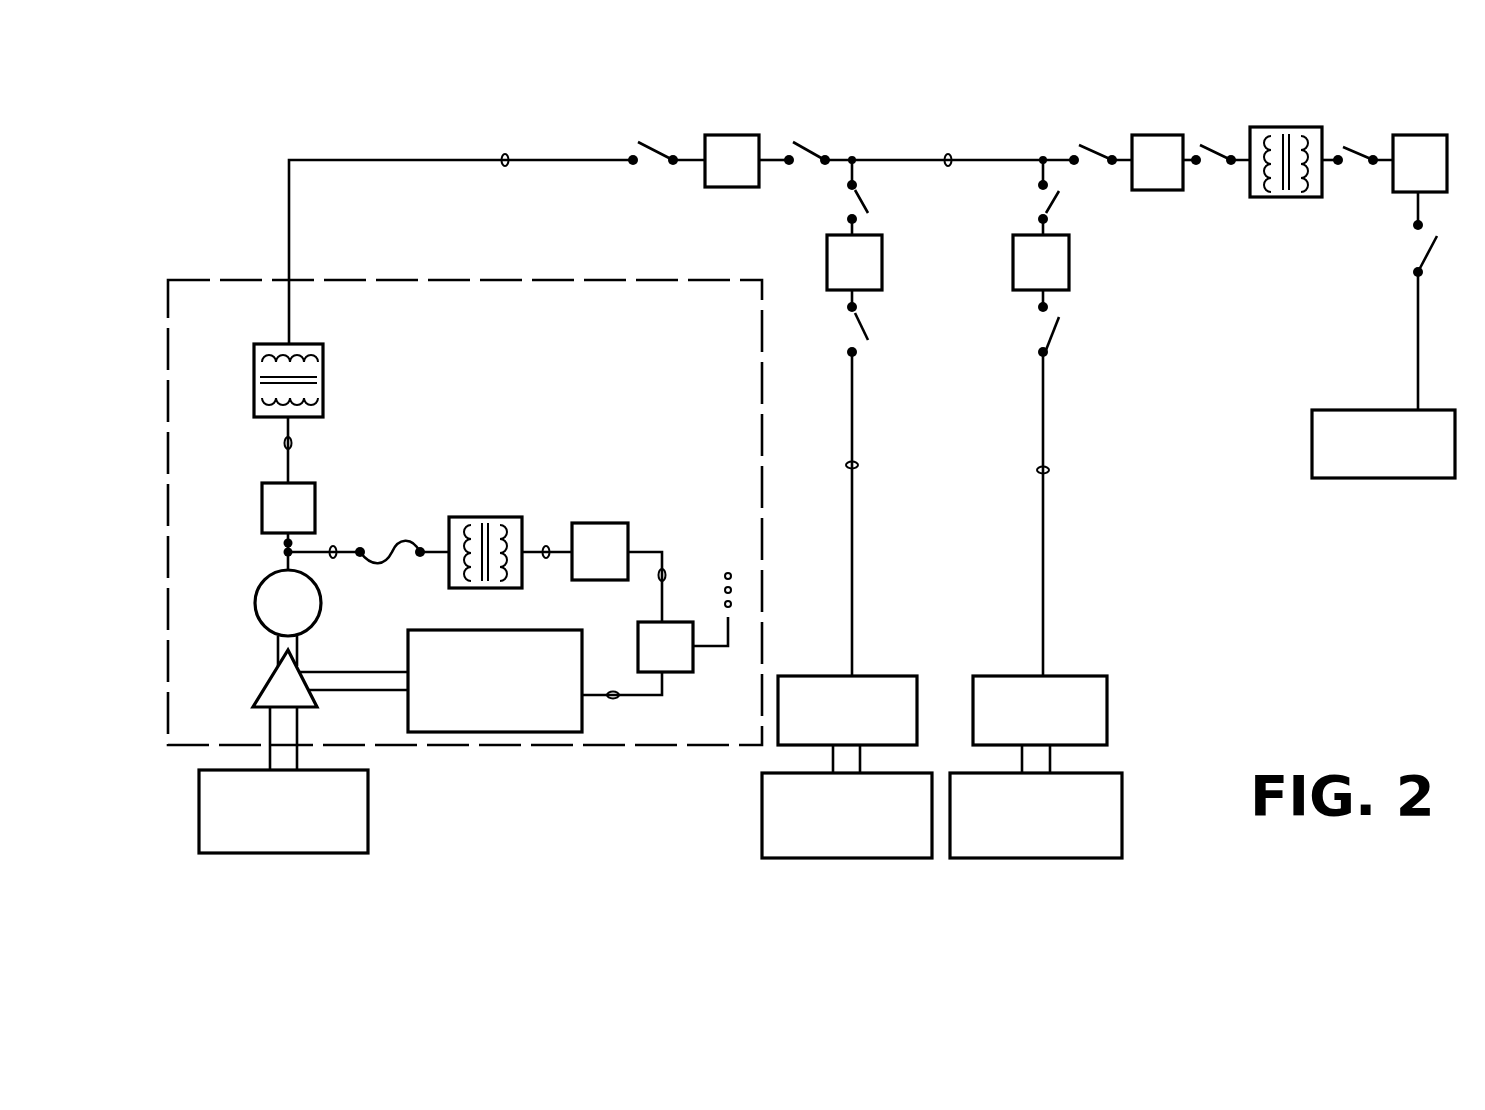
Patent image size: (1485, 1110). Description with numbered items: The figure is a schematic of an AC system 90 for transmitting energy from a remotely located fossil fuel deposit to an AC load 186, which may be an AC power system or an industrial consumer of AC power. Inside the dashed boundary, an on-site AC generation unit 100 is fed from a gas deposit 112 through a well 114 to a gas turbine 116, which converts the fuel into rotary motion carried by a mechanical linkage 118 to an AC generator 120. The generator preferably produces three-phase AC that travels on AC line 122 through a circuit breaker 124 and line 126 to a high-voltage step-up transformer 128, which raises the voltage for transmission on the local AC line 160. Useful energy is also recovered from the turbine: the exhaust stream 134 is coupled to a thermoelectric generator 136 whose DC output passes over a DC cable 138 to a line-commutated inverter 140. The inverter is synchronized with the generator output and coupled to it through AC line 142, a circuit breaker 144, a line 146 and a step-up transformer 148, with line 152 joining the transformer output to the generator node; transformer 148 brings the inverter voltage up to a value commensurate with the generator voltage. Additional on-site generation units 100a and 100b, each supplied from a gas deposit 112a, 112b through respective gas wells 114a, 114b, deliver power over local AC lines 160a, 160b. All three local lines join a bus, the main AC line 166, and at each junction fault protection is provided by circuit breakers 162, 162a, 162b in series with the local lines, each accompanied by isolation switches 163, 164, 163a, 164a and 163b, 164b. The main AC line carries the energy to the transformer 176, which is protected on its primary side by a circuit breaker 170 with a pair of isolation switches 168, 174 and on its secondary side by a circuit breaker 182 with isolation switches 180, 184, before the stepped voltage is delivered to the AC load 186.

The AC system 90 is at (1196, 554).
The on-site AC generation unit 100 is at (551, 371).
The additional on-site generation unit 100a is at (890, 676).
The additional on-site generation unit 100b is at (1085, 676).
The gas deposit 112 is at (368, 795).
The gas deposit 112a is at (762, 809).
The gas deposit 112b is at (1122, 797).
The well 114 is at (300, 756).
The gas well 114a is at (863, 760).
The gas well 114b is at (1053, 757).
The gas turbine 116 is at (313, 709).
The mechanical linkage 118 is at (300, 645).
The AC generator 120 is at (256, 606).
The AC line 122 is at (284, 544).
The circuit breaker 124 is at (315, 488).
The line 126 is at (284, 443).
The high-voltage step-up transformer 128 is at (325, 370).
The exhaust stream 134 is at (396, 672).
The thermoelectric generator 136 is at (495, 630).
The DC cable 138 is at (618, 698).
The line-commutated inverter 140 is at (660, 622).
The AC line 142 is at (665, 577).
The circuit breaker 144 is at (620, 523).
The line 146 is at (546, 546).
The step-up transformer 148 is at (478, 517).
The line 152 is at (333, 546).
The local AC line 160 is at (505, 153).
The local AC line 160a is at (857, 467).
The local AC line 160b is at (1049, 471).
The circuit breaker 162 is at (740, 135).
The circuit breaker 162a is at (882, 252).
The circuit breaker 162b is at (1069, 252).
The isolation switch 163 is at (645, 143).
The isolation switch 163a is at (863, 323).
The isolation switch 163b is at (1066, 318).
The isolation switch 164 is at (814, 146).
The isolation switch 164a is at (857, 191).
The isolation switch 164b is at (1051, 191).
The main AC line 166 is at (947, 154).
The isolation switch 168 is at (1096, 145).
The circuit breaker 170 is at (1160, 135).
The isolation switch 174 is at (1210, 147).
The transformer 176 is at (1284, 127).
The isolation switch 180 is at (1357, 146).
The circuit breaker 182 is at (1422, 135).
The isolation switch 184 is at (1432, 243).
The AC load 186 is at (1436, 410).